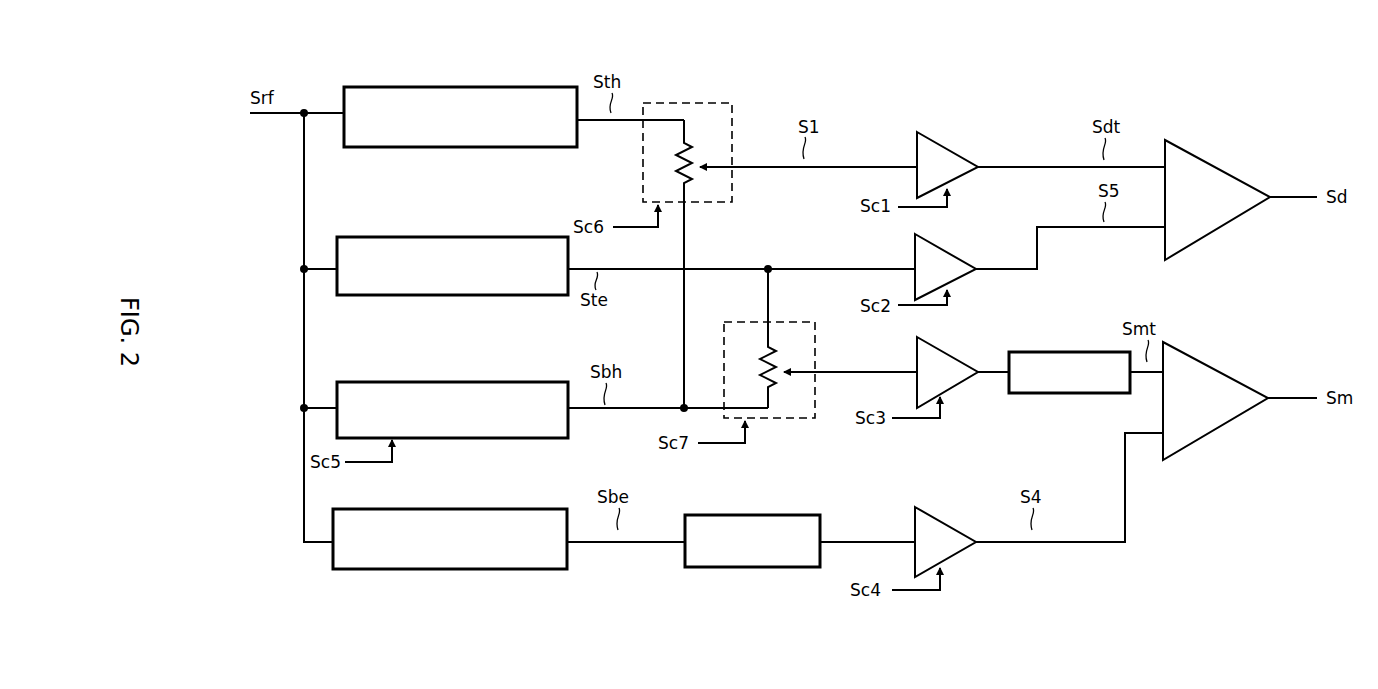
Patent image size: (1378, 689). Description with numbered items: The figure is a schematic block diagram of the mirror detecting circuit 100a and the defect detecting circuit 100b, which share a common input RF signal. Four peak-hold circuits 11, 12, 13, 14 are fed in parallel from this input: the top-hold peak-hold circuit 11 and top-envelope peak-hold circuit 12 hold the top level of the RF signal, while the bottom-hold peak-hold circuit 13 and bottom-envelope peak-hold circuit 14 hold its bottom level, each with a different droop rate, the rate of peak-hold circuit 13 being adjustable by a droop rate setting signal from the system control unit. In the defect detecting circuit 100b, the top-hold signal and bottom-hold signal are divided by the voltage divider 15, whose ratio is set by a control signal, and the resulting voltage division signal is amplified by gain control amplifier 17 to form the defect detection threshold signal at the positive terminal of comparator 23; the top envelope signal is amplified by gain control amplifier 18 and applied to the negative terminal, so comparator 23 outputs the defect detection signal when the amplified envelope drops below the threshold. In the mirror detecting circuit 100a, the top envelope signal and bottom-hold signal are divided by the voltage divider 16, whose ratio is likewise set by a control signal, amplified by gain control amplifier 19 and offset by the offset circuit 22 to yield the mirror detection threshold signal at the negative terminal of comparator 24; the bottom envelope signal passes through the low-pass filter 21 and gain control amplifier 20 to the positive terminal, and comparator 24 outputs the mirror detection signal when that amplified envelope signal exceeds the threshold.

The peak-hold circuit 11 is at (469, 87).
The peak-hold circuit 12 is at (480, 237).
The peak-hold circuit 13 is at (484, 382).
The peak-hold circuit 14 is at (477, 508).
The voltage divider 15 is at (693, 103).
The voltage divider 16 is at (791, 322).
The gain control amplifier 17 is at (950, 142).
The gain control amplifier 18 is at (962, 240).
The gain control amplifier 19 is at (960, 351).
The gain control amplifier 20 is at (943, 509).
The low-pass filter 21 is at (791, 514).
The offset circuit 22 is at (1068, 342).
The comparator 23 is at (1220, 167).
The comparator 24 is at (1212, 364).
The mirror detecting circuit 100a is at (1090, 646).
The defect detecting circuit 100b is at (1090, 66).